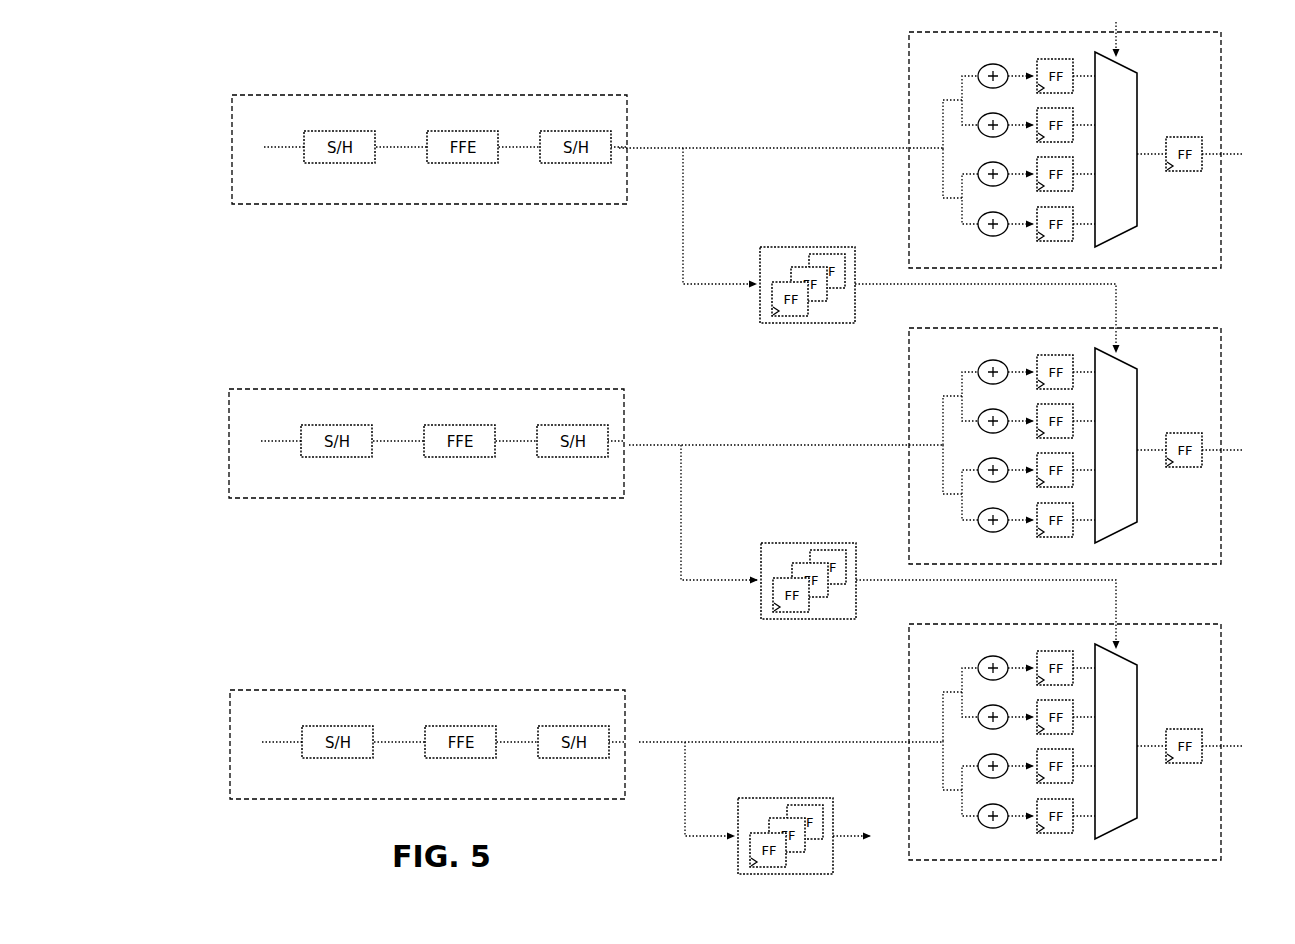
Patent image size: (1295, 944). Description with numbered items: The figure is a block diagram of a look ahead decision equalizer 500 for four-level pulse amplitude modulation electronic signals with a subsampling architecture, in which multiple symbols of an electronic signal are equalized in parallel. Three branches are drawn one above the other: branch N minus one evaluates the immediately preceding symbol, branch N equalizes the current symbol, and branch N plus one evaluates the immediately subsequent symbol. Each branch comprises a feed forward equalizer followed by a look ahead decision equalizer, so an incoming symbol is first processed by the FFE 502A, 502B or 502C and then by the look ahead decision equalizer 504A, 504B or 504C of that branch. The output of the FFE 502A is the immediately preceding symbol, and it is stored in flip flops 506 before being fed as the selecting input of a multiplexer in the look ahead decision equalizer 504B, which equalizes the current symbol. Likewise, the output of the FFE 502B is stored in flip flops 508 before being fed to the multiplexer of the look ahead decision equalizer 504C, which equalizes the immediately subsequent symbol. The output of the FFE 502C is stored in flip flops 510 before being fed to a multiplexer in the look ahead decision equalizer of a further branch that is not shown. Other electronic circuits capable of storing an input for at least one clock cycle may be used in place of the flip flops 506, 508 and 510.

The multi-channel equalizer circuit 500 is at (238, 82).
The FFE 502A is at (583, 94).
The FFE 502B is at (604, 391).
The FFE 502C is at (614, 697).
The look ahead decision equalizer 504A is at (1225, 67).
The look ahead decision equalizer 504B is at (1226, 381).
The look ahead decision equalizer 504C is at (1224, 674).
The flip flops 506 is at (825, 246).
The flip flops 508 is at (818, 542).
The flip flops 510 is at (795, 797).